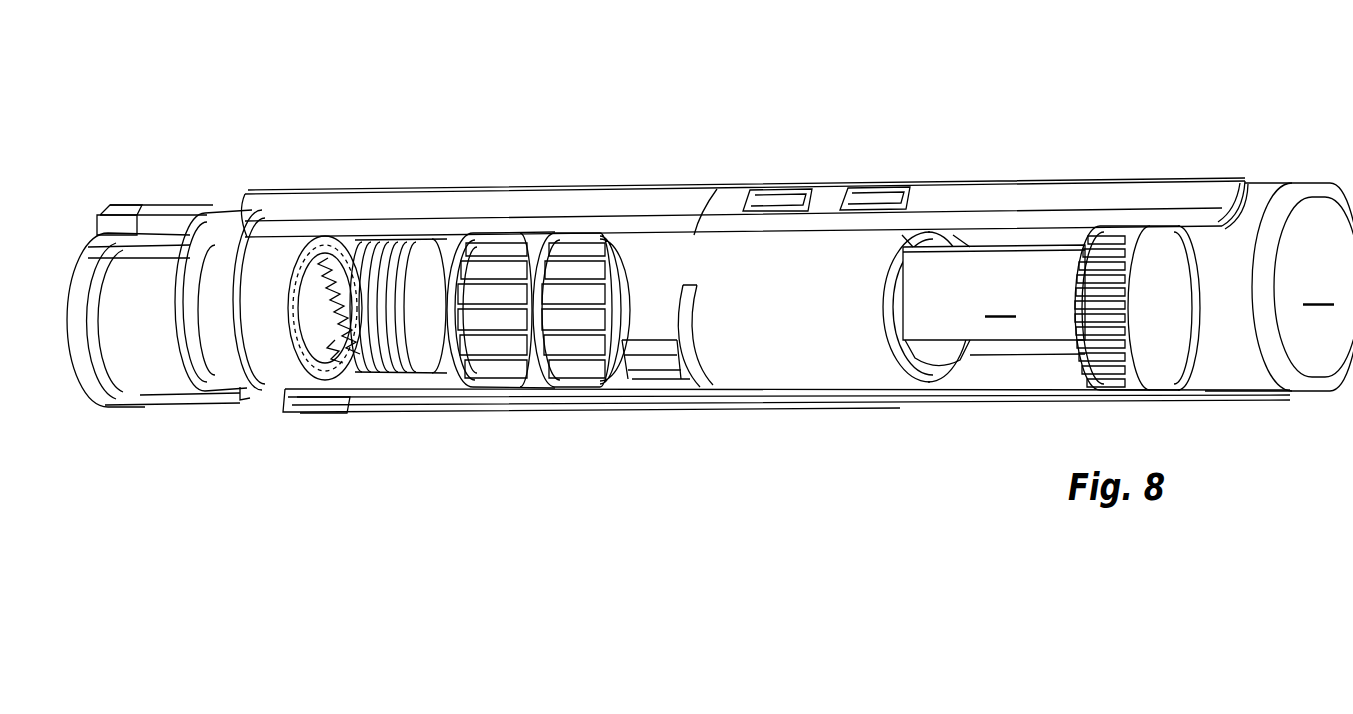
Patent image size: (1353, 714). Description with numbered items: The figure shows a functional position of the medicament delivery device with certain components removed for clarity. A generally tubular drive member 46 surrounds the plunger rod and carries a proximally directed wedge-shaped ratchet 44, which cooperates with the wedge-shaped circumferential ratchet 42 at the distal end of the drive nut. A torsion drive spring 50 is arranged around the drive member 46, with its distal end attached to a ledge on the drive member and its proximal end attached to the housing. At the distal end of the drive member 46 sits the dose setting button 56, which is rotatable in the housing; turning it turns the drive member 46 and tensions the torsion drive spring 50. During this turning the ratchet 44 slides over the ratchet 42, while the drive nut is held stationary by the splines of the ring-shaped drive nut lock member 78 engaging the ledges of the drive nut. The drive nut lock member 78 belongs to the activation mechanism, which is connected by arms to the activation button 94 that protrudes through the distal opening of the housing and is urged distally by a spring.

The wedge-shaped circumferential ratchet 42 is at (330, 268).
The wedge-shaped ratchet 44 is at (343, 323).
The drive member 46 is at (984, 307).
The torsion drive spring 50 is at (380, 274).
The dose setting button 56 is at (1147, 263).
The drive nut lock member 78 is at (283, 360).
The activation button 94 is at (1279, 287).